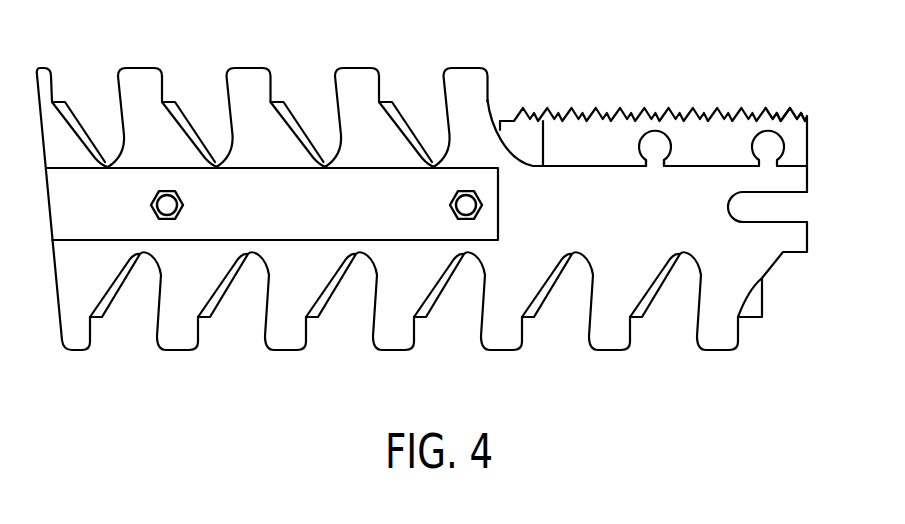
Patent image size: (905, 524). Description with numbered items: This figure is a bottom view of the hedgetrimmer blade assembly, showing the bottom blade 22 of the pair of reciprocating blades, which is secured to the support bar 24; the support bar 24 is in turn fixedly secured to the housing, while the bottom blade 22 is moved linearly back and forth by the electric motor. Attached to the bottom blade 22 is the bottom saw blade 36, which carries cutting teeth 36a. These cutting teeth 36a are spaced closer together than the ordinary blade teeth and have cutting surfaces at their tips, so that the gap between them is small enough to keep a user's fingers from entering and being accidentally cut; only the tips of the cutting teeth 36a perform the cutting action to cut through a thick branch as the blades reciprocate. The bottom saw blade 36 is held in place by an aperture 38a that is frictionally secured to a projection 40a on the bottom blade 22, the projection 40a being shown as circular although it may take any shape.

The bottom blade 22 is at (676, 126).
The support bar 24 is at (273, 217).
The bottom saw blade 36 is at (590, 140).
The cutting teeth 36a is at (796, 100).
The aperture 38a is at (662, 157).
The projection 40a is at (657, 147).